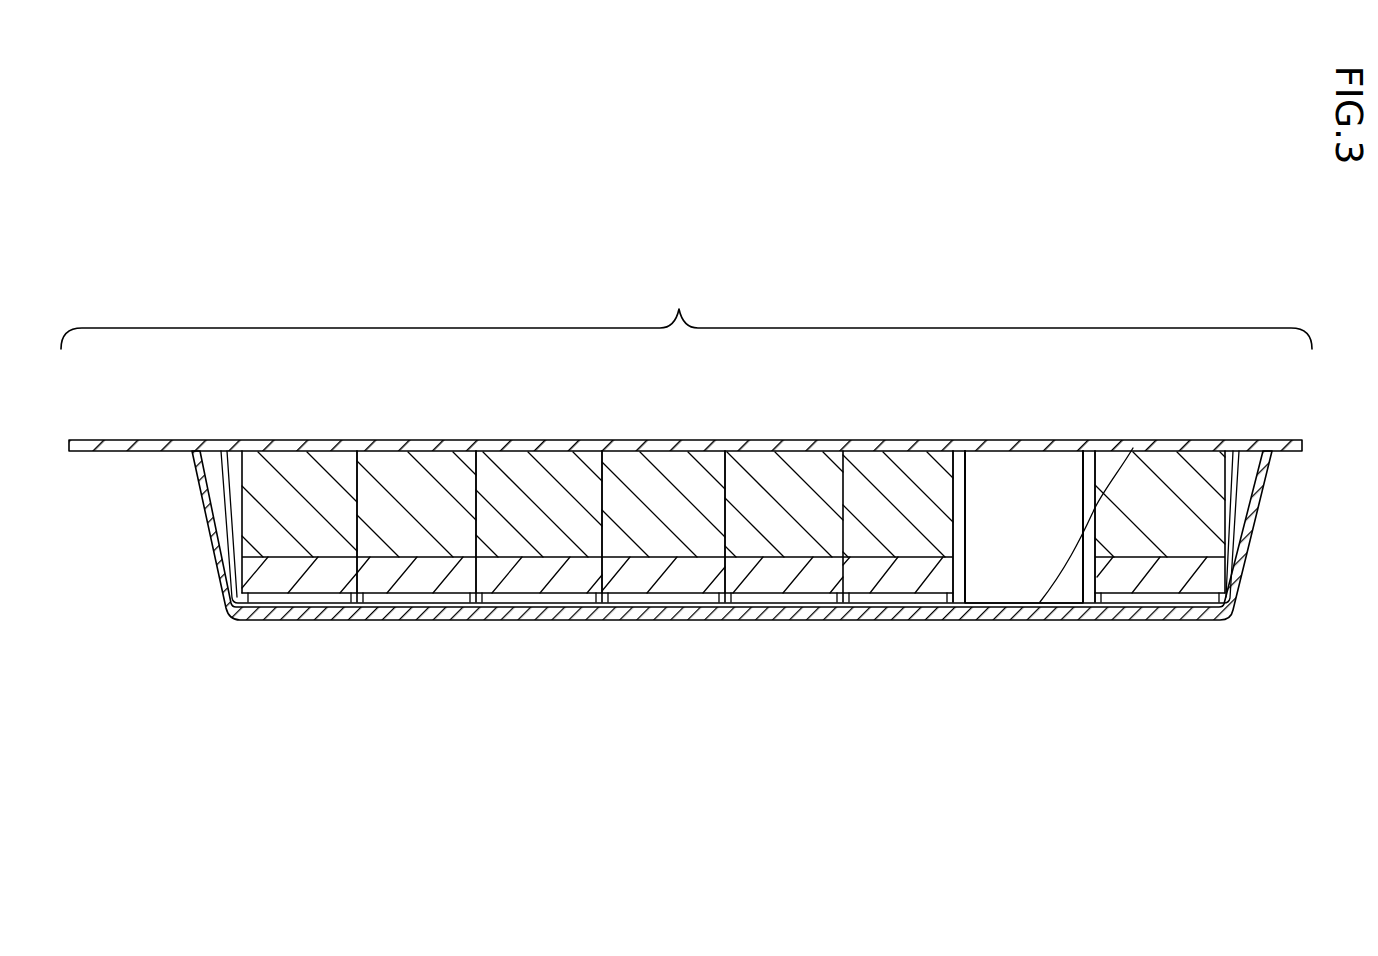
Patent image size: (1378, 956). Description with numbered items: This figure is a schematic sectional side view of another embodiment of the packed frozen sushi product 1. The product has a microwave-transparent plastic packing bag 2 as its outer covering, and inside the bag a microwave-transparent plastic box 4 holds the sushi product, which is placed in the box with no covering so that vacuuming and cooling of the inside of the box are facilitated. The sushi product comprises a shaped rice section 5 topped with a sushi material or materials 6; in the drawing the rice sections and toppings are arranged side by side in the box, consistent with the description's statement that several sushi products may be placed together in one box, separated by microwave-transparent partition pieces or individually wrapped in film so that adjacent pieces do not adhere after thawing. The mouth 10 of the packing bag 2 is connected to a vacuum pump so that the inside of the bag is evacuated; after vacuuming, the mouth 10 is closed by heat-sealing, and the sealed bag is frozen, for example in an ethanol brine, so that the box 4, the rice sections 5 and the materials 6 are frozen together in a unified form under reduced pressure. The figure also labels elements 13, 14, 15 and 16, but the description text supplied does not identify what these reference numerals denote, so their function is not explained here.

The packed frozen sushi product 1 is at (686, 310).
The plastic packing bag 2 is at (1268, 540).
The plastic box 4 is at (214, 510).
The shaped rice section 5 is at (549, 461).
The sushi material 6 is at (768, 580).
The mouth of the packing bag 10 is at (100, 455).
The gap 13 is at (897, 603).
The empty compartment 14 is at (1031, 560).
The interface between blocks 15 is at (476, 498).
The partition wall 16 is at (1080, 545).